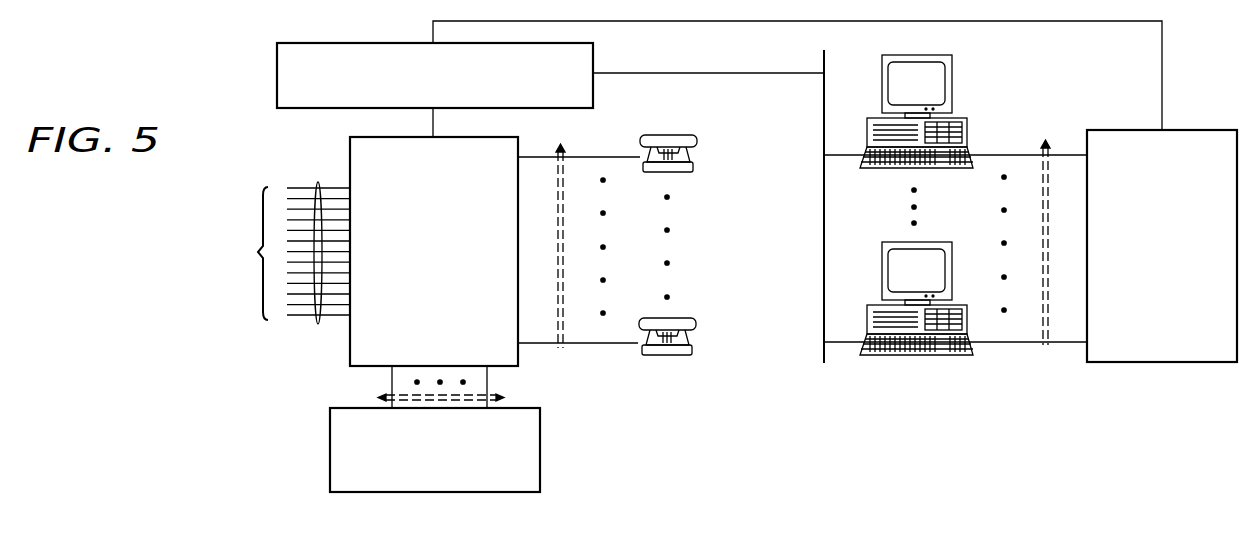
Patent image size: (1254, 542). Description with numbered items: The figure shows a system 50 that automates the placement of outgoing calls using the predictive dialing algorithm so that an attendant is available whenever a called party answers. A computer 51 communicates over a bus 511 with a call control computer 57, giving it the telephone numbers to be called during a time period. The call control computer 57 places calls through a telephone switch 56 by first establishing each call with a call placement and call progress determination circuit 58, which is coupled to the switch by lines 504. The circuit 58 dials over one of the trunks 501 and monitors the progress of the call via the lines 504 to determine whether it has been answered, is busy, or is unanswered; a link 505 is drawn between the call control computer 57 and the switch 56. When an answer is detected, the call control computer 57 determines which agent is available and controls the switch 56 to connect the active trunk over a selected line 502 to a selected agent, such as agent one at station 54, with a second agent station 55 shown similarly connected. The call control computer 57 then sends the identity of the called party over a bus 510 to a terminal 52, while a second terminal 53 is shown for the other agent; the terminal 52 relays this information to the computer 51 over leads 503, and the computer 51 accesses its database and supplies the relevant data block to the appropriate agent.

The system 50 is at (230, 154).
The computer 51 is at (1150, 262).
The terminal 52 is at (882, 100).
The agent workstation terminal 53 is at (882, 287).
The station 54 is at (664, 135).
The agent telephone 55 is at (667, 364).
The telephone switch 56 is at (422, 288).
The call control computer 57 is at (277, 75).
The call placement and call progress determination circuit 58 is at (540, 447).
The trunks 501 is at (318, 182).
The line 502 is at (559, 350).
The leads 503 is at (1046, 348).
The lines 504 is at (390, 398).
The link between call control computer and telephone switch 505 is at (433, 127).
The bus 510 is at (728, 73).
The bus 511 is at (1026, 22).